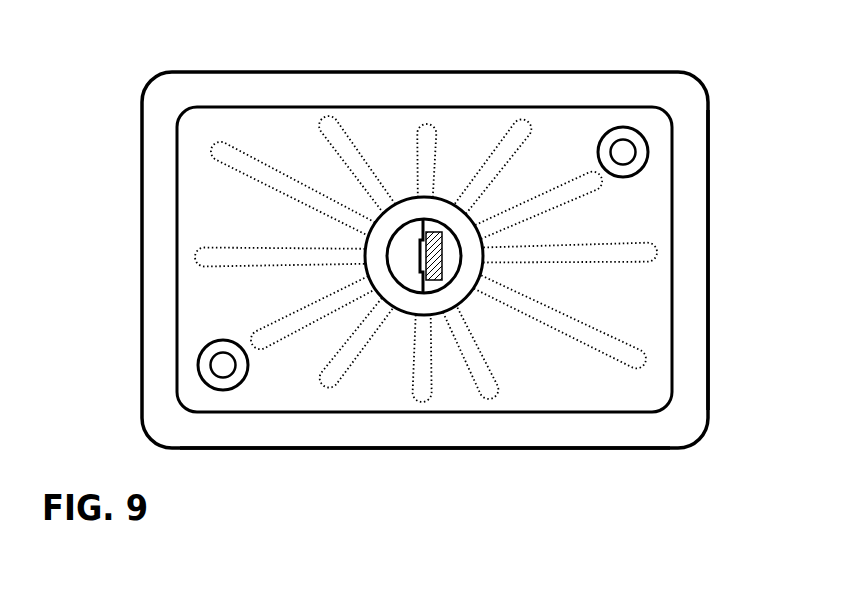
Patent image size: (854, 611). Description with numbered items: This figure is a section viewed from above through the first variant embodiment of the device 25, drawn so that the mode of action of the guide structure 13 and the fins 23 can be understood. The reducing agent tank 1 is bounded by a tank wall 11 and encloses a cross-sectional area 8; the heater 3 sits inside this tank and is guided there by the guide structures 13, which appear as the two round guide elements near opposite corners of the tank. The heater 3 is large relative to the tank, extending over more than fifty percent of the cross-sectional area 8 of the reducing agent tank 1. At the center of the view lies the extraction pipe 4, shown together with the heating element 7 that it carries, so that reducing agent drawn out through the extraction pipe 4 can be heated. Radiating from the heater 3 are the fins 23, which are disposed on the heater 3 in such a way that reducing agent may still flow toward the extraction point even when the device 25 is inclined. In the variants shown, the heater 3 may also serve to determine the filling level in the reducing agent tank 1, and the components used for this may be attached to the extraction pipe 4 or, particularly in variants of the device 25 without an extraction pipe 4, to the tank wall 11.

The device 25 is at (110, 74).
The reducing agent tank 1 is at (708, 130).
The heater 3 is at (637, 107).
The extraction pipe 4 is at (480, 287).
The heating element 7 is at (443, 245).
The cross-sectional area 8 is at (298, 448).
The tank wall 11 is at (708, 348).
The guide structure 13 is at (622, 128).
The fins 23 is at (422, 153).